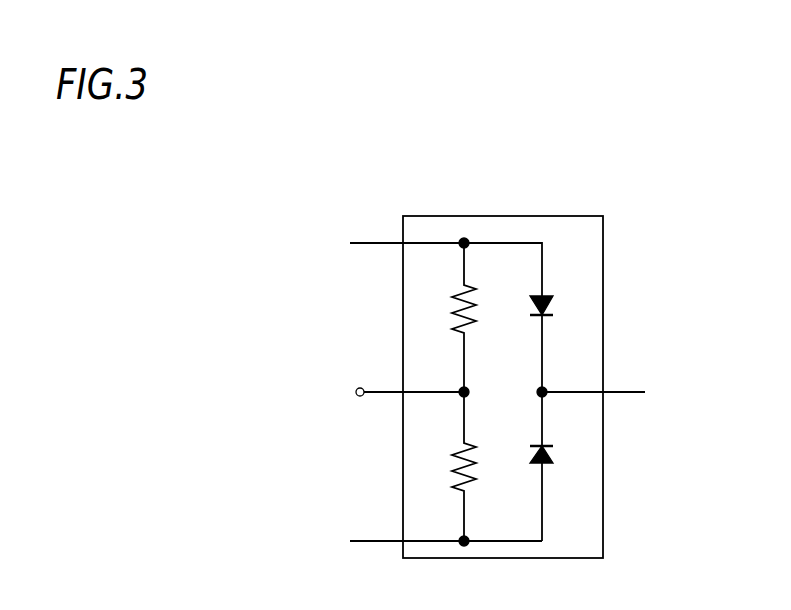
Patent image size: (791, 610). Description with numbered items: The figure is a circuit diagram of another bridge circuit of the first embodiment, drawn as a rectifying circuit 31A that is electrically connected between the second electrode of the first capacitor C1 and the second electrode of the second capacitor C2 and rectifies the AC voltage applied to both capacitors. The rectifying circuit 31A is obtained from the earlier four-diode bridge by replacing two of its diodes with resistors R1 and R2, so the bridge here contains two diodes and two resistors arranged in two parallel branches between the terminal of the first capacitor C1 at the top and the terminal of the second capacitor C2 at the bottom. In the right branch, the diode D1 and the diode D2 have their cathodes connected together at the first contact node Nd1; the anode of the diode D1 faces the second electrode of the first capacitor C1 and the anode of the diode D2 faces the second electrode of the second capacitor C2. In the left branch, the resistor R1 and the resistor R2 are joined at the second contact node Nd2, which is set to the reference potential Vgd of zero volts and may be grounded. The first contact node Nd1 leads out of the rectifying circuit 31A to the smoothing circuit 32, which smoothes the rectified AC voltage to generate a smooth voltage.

The rectifying circuit 31A is at (535, 216).
The smoothing circuit 32 is at (609, 395).
The first capacitor C1 is at (433, 386).
The second capacitor C2 is at (432, 542).
The reference potential Vgd is at (389, 393).
The resistor R1 is at (448, 317).
The resistor R2 is at (448, 466).
The diode D1 is at (560, 306).
The diode D2 is at (560, 456).
The first contact node Nd1 is at (540, 392).
The second contact node Nd2 is at (462, 392).